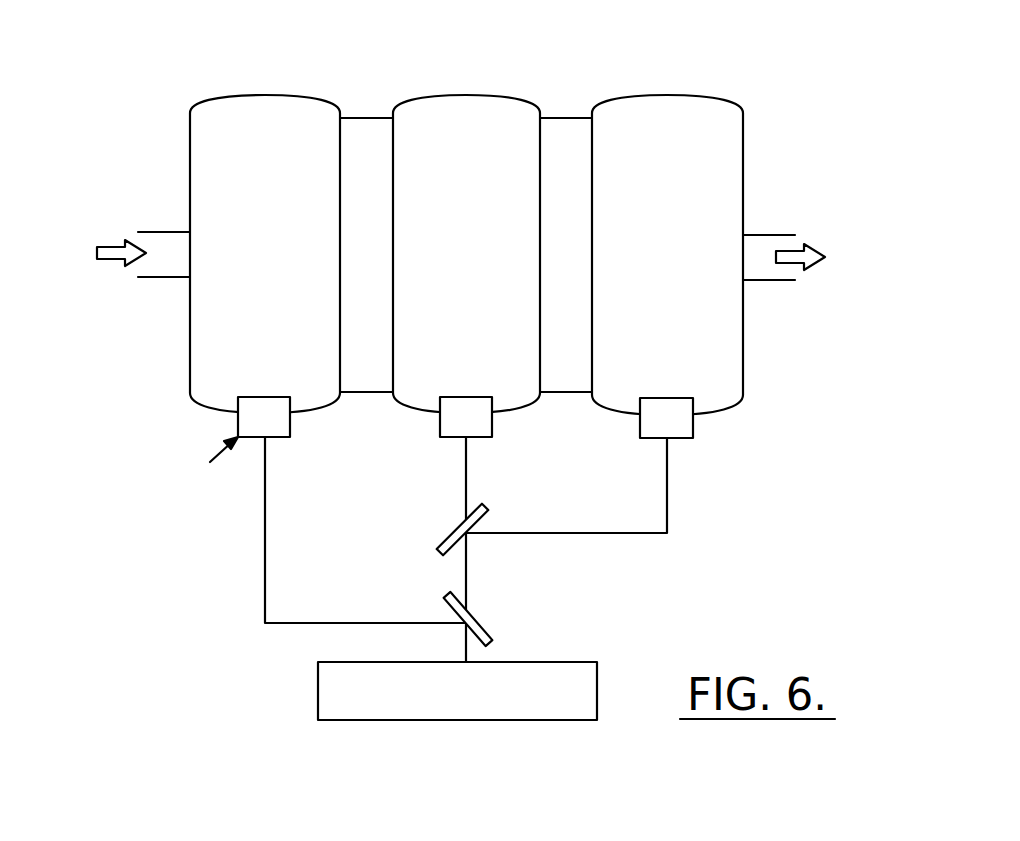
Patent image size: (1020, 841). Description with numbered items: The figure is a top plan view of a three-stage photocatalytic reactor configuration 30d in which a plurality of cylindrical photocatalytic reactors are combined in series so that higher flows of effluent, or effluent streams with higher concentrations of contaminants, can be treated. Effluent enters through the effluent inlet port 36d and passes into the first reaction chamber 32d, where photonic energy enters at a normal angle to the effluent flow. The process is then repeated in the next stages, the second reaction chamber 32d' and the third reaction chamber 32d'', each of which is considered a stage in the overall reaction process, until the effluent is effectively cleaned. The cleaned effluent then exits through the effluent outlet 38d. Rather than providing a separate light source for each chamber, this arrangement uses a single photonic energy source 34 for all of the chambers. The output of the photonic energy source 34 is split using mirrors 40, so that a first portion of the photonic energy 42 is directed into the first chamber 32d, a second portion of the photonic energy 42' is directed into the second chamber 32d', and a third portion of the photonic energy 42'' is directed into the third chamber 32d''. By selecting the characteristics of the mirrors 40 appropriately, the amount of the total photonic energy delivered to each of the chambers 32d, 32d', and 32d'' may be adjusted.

The photocatalytic reactor configuration 30d is at (800, 57).
The first reaction chamber 32d is at (265, 254).
The second reaction chamber 32d' is at (466, 254).
The third reaction chamber 32d'' is at (667, 255).
The photonic energy source 34 is at (573, 662).
The effluent inlet port 36d is at (165, 278).
The effluent outlet 38d is at (765, 282).
The mirrors 40 is at (442, 552).
The first portion of the photonic energy 42 is at (277, 510).
The second portion of the photonic energy 42' is at (443, 529).
The third portion of the photonic energy 42'' is at (600, 465).